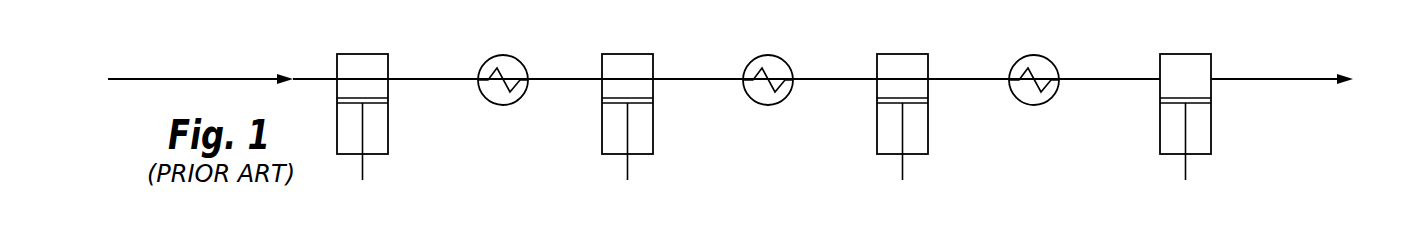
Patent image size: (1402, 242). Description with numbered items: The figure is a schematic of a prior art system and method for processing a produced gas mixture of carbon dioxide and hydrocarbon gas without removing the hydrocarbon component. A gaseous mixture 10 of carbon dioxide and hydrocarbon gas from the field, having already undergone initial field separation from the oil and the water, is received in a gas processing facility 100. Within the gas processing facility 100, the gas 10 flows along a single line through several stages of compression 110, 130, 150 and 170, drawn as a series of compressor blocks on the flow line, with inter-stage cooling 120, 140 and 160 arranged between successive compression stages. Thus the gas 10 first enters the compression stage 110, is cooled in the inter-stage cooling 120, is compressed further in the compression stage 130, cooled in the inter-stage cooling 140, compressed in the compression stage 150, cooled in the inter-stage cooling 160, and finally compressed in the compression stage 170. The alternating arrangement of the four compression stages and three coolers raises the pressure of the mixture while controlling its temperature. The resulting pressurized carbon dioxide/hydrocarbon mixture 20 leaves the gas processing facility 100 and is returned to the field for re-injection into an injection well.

The gaseous mixture 10 is at (212, 78).
The pressurized carbon dioxide/hydrocarbon mixture 20 is at (1322, 78).
The gas processing facility 100 is at (1060, 174).
The stage of compression 110 is at (361, 53).
The inter-stage cooling 120 is at (503, 55).
The stage of compression 130 is at (625, 53).
The inter-stage cooling 140 is at (768, 55).
The stage of compression 150 is at (900, 53).
The inter-stage cooling 160 is at (1034, 55).
The stage of compression 170 is at (1186, 53).